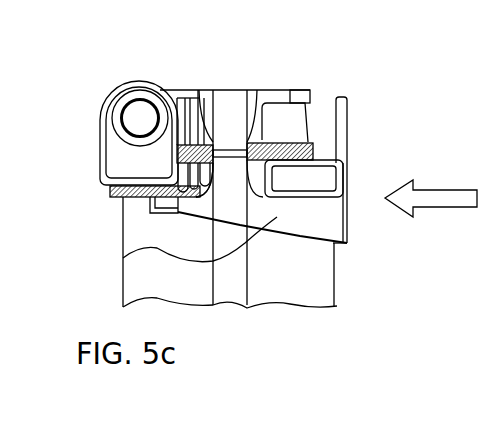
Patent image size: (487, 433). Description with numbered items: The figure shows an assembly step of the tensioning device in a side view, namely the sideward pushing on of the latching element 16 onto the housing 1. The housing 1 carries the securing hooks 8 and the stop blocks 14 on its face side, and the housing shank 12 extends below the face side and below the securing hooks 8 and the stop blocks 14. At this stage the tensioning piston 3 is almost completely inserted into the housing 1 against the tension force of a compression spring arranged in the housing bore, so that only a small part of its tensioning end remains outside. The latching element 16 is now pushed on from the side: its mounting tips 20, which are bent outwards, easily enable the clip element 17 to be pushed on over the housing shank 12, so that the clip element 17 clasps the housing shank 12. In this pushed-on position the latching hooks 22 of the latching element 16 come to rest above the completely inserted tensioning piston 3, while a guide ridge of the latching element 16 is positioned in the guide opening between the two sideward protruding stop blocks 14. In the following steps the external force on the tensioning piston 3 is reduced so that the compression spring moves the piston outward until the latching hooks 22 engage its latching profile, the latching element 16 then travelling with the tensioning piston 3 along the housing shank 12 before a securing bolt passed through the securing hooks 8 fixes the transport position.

The housing 1 is at (309, 302).
The tensioning piston 3 is at (307, 124).
The securing hook 8 is at (115, 166).
The housing shank 12 is at (349, 122).
The stop block 14 is at (318, 180).
The latching element 16 is at (333, 223).
The clip element 17 is at (125, 258).
The mounting tip 20 is at (157, 203).
The latching hook 22 is at (282, 90).